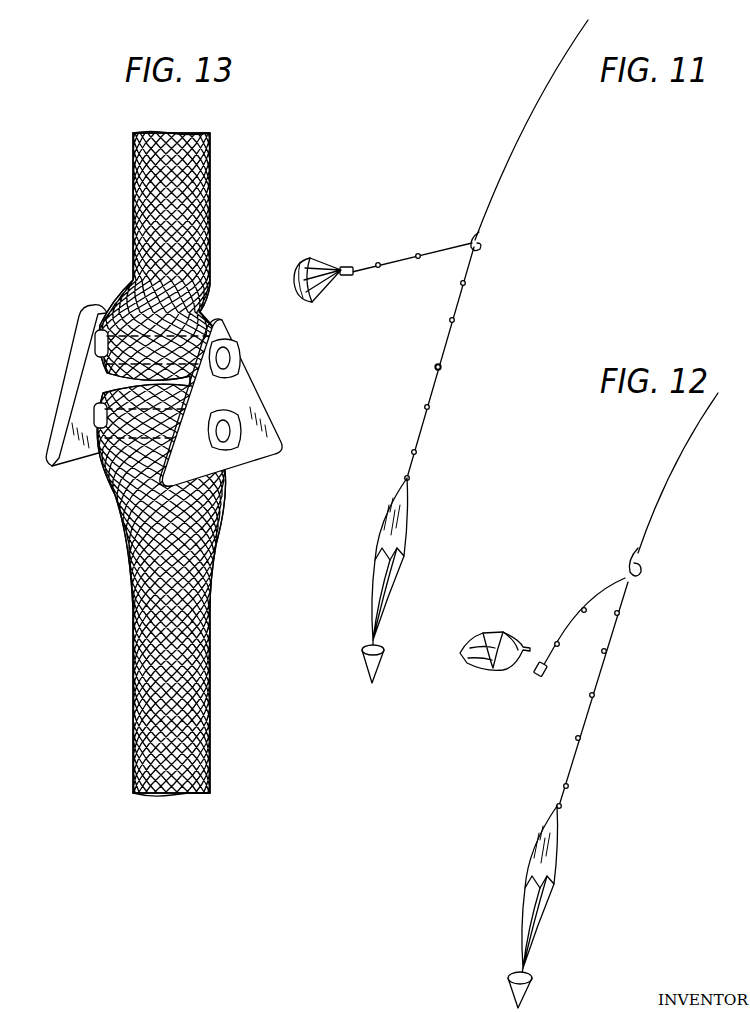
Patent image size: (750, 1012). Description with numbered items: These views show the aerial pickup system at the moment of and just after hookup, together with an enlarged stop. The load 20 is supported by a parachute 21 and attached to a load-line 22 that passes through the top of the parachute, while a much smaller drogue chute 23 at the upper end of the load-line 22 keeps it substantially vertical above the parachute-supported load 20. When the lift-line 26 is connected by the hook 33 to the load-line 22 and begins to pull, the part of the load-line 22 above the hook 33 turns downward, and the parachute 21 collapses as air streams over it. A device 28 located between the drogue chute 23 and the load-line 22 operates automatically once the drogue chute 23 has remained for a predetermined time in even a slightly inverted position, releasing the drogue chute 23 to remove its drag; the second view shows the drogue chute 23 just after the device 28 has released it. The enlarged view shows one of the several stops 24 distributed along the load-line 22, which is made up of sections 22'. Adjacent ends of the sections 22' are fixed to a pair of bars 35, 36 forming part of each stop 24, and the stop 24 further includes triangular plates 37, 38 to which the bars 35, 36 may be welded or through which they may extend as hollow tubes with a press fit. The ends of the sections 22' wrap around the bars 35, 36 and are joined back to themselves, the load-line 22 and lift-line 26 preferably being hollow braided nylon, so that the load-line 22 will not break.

In FIG. 11, the load 20 is at (385, 655).
In FIG. 12, the load 20 is at (532, 995).
In FIG. 11, the parachute 21 is at (404, 530).
In FIG. 12, the parachute 21 is at (556, 850).
In FIG. 11, the load-line 22 is at (445, 363).
In FIG. 12, the load-line 22 is at (592, 695).
In FIG. 13, the sections 22' is at (177, 464).
In FIG. 11, the drogue chute 23 is at (309, 301).
In FIG. 12, the drogue chute 23 is at (480, 665).
In FIG. 13, the stop 24 is at (340, 427).
In FIG. 11, the stop 24 is at (440, 367).
In FIG. 11, the lift-line 26 is at (533, 108).
In FIG. 12, the lift-line 26 is at (672, 478).
In FIG. 11, the device 28 is at (358, 264).
In FIG. 12, the device 28 is at (541, 687).
In FIG. 11, the hook 33 is at (478, 250).
In FIG. 12, the hook 33 is at (640, 575).
In FIG. 13, the bar 35 is at (228, 437).
In FIG. 13, the bar 36 is at (226, 357).
In FIG. 13, the triangular plate 37 is at (83, 370).
In FIG. 13, the triangular plate 38 is at (248, 393).